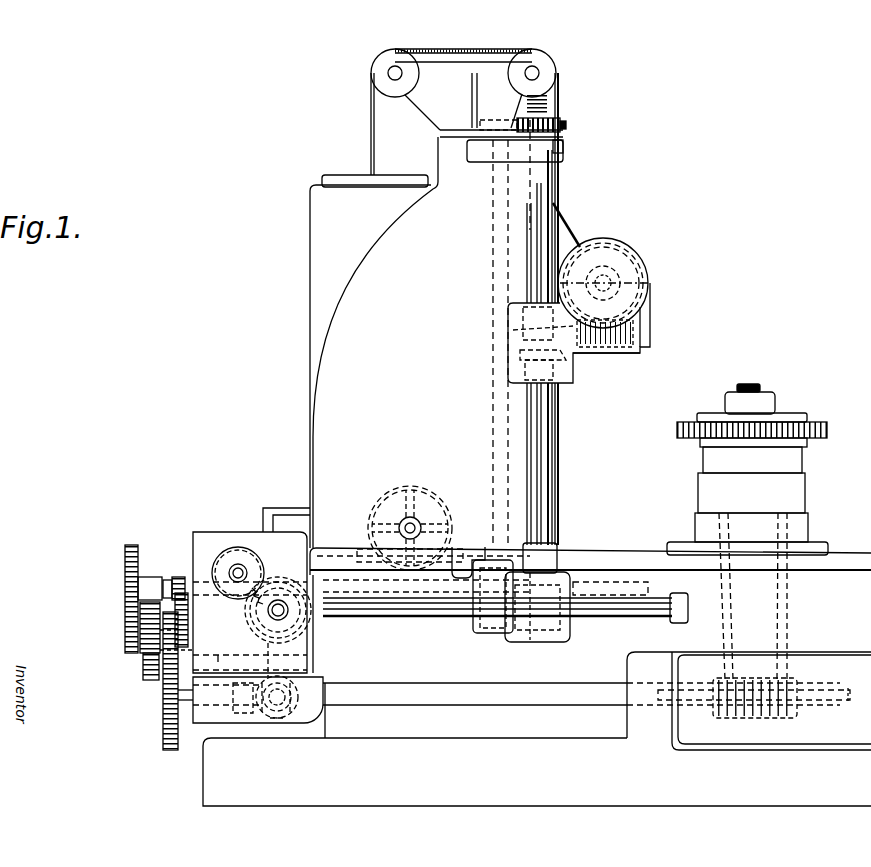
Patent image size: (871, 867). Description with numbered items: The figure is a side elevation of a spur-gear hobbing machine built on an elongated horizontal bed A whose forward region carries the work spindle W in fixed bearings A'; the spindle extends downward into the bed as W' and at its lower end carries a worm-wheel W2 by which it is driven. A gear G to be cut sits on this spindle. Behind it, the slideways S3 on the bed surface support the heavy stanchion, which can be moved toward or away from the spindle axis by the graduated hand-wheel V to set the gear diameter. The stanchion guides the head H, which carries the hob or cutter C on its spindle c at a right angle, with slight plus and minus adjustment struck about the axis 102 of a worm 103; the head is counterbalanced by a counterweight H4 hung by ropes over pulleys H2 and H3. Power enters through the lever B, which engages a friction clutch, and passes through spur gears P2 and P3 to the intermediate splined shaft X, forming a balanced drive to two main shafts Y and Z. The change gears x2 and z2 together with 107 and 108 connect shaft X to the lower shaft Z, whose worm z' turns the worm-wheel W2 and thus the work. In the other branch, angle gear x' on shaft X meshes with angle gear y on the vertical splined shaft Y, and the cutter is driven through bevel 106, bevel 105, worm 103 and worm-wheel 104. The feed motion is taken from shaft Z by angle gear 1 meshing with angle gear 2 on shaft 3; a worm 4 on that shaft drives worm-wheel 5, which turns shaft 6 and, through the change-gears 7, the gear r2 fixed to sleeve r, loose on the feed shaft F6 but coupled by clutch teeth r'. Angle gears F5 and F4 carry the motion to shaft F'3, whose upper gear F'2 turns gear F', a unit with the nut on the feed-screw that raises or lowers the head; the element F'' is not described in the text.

The bed A is at (537, 772).
The lower horizontal non-splined transmission shaft Z is at (435, 698).
The worm z' is at (586, 684).
The worm-wheel W2 is at (826, 690).
The fixed bearings A' is at (747, 484).
The worm wheel G is at (828, 431).
The work spindle W is at (769, 394).
The downward extension of work spindle W' is at (753, 596).
The slideways S3 is at (597, 552).
The shaft F6 is at (620, 580).
The intermediate splined shaft X is at (393, 622).
The angle gear F4 is at (458, 548).
The angle gear F5 is at (478, 618).
The angle gear x' is at (537, 622).
The angle gear y is at (561, 642).
The hand-wheel V is at (430, 497).
The counterweight H4 is at (353, 176).
The pulley H3 is at (372, 74).
The pulley H2 is at (556, 90).
The gear F'2 is at (474, 101).
The gear F' is at (511, 103).
The nut F'' is at (563, 129).
The shaft F'3 is at (486, 334).
The splined transmission shaft Y is at (558, 421).
The head H is at (572, 224).
The cutter C is at (604, 282).
The spindle c is at (605, 283).
The worm-wheel 104 is at (652, 284).
The axis of worm 102 is at (640, 325).
The worm 103 is at (615, 345).
The bevel 105 is at (512, 330).
The bevel 106 is at (512, 356).
The power lever B is at (292, 510).
The spur gear P2 is at (234, 553).
The spur gear P3 is at (292, 623).
The worm 4 is at (288, 699).
The angle gear 1 is at (256, 718).
The angle gear 2 is at (269, 718).
The shaft 3 is at (282, 718).
The worm-wheel 5 is at (266, 645).
The shaft 6 is at (212, 651).
The gear r2 is at (125, 563).
The sleeve r is at (150, 576).
The clutch teeth r' is at (174, 576).
The change gear x2 is at (189, 613).
The change gear 107 is at (176, 634).
The change-gears 7 is at (124, 633).
The change gear 108 is at (142, 656).
The change gear z2 is at (163, 746).